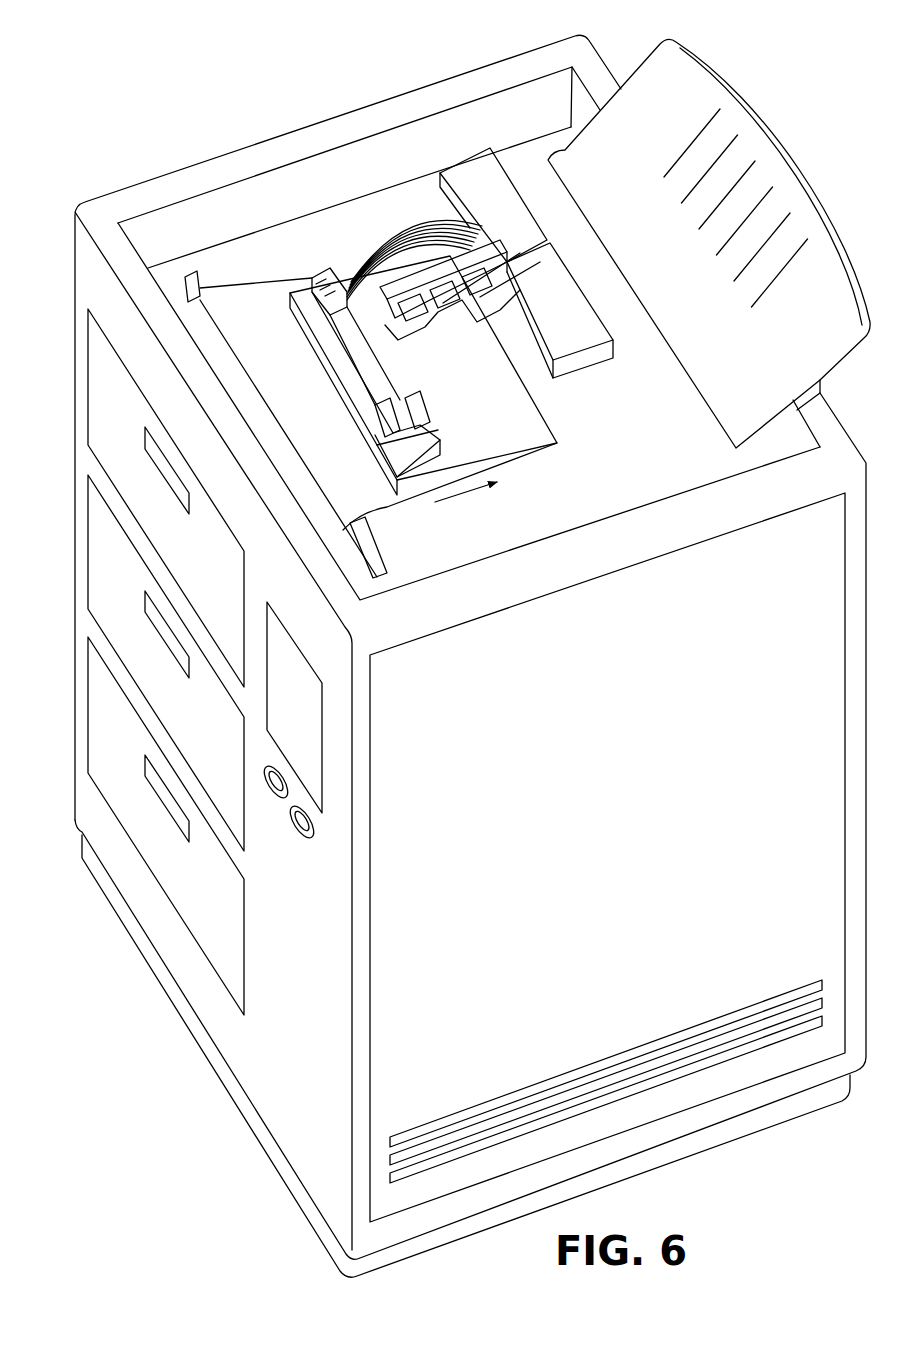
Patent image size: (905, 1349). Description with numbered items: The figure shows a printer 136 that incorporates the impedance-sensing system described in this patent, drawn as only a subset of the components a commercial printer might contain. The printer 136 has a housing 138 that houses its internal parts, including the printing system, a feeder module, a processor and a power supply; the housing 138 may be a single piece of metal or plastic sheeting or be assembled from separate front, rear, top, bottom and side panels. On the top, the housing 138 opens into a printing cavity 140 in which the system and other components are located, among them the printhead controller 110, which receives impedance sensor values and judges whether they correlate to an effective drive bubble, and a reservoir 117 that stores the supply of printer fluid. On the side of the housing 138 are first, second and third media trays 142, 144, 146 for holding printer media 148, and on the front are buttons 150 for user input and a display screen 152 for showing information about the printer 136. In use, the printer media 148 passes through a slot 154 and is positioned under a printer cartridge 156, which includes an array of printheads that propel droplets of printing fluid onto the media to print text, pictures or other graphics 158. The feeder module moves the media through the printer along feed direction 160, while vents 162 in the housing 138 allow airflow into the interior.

The printer 136 is at (212, 72).
The housing 138 is at (292, 133).
The printhead controller 110 is at (463, 157).
The reservoir 117 is at (577, 267).
The printing cavity 140 is at (660, 450).
The first media tray 142 is at (100, 384).
The second media tray 144 is at (100, 547).
The third media tray 146 is at (100, 713).
The printer media 148 is at (532, 402).
The buttons 150 is at (303, 838).
The display screen 152 is at (313, 735).
The slot 154 is at (373, 543).
The printer cartridge 156 is at (310, 277).
The graphics 158 is at (493, 360).
The feed direction 160 is at (463, 497).
The vents 162 is at (603, 1057).